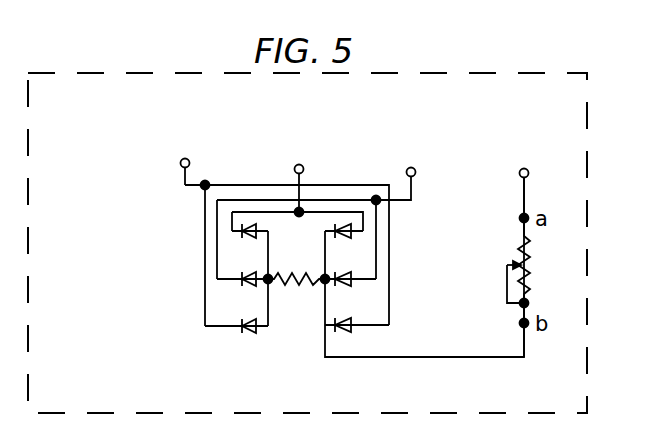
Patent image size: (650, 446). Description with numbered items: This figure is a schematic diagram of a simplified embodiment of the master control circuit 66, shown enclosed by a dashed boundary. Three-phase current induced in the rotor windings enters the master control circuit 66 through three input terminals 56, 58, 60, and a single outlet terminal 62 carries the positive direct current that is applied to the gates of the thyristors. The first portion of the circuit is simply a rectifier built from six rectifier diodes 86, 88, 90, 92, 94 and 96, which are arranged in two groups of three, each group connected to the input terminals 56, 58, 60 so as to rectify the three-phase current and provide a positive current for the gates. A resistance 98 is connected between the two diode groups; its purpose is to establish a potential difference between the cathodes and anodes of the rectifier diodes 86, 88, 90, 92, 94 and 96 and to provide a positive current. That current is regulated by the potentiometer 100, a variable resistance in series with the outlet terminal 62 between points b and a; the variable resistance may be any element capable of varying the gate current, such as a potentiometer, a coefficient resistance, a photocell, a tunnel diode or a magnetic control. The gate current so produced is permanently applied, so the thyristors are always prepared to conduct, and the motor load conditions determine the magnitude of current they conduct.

The input terminal 56 is at (189, 161).
The input terminal 58 is at (299, 176).
The input terminal 60 is at (399, 170).
The outlet terminal 62 is at (524, 184).
The master control circuit 66 is at (512, 405).
The rectifier diode 86 is at (354, 232).
The rectifier diode 88 is at (354, 275).
The rectifier diode 90 is at (353, 328).
The rectifier diode 92 is at (243, 237).
The rectifier diode 94 is at (242, 283).
The rectifier diode 96 is at (250, 331).
The resistance 98 is at (293, 283).
The potentiometer 100 is at (531, 259).